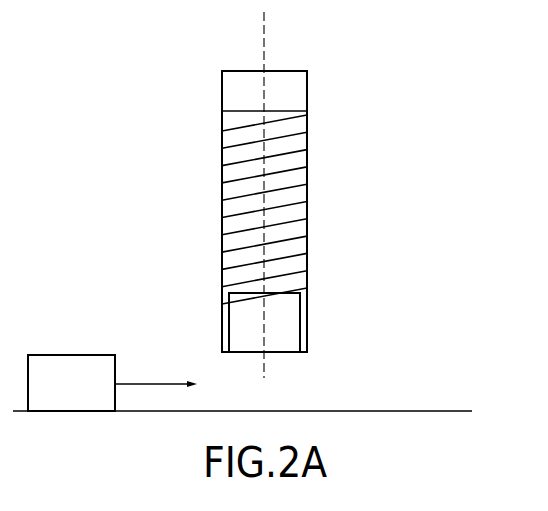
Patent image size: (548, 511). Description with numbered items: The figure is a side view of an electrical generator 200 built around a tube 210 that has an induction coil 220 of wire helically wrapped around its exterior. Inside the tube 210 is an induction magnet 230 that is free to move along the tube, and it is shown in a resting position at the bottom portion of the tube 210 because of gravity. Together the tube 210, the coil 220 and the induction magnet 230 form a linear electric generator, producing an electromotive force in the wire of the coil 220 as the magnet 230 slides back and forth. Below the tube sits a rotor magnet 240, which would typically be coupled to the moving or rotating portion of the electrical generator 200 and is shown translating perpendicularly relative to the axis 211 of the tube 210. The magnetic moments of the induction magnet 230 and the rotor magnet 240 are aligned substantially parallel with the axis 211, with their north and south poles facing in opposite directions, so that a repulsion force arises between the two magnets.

The electrical generator 200 is at (240, 195).
The tube 210 is at (307, 90).
The axis 211 is at (267, 53).
The induction coil 220 is at (290, 161).
The induction magnet 230 is at (288, 325).
The rotor magnet 240 is at (93, 368).